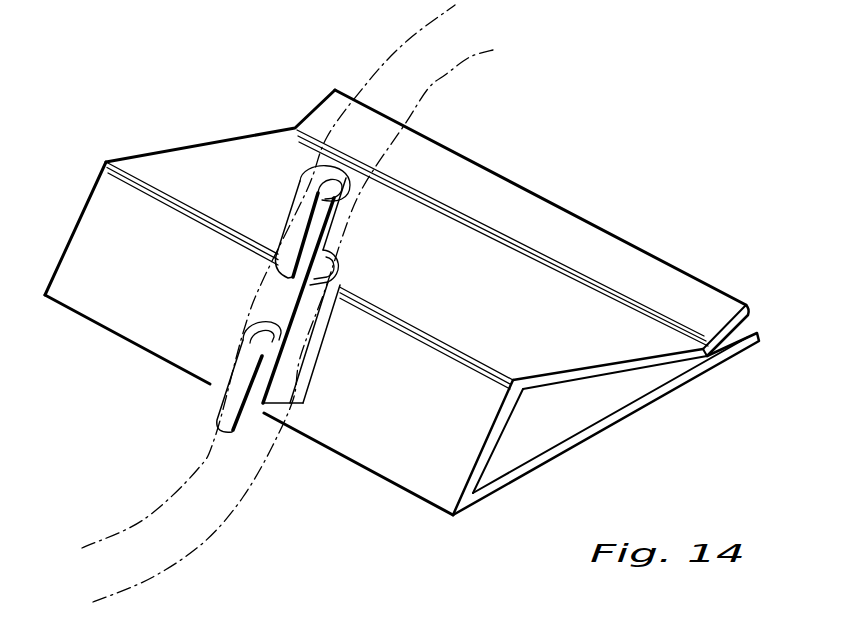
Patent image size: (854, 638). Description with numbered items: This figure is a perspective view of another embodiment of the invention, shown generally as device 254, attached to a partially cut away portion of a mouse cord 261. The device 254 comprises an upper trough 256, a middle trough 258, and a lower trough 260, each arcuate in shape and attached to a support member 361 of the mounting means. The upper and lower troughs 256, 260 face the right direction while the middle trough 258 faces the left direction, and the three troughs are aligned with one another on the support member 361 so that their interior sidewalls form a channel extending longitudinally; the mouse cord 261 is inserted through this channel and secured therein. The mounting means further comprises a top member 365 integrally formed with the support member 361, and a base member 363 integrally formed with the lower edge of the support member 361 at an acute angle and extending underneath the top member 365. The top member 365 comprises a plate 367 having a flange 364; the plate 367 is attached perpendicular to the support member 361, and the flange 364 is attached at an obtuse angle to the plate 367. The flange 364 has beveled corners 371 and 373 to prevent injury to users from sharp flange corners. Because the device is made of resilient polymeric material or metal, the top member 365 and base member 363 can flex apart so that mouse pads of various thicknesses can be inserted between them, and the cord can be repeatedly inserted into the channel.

The device 254 is at (94, 153).
The upper arcuate-shaped trough 256 is at (307, 208).
The middle arcuate-shaped trough 258 is at (322, 320).
The lower arcuate-shaped trough 260 is at (218, 406).
The mouse cord 261 is at (428, 70).
The support member 361 is at (420, 478).
The base member 363 is at (596, 426).
The flange 364 is at (618, 258).
The top member 365 is at (527, 319).
The plate 367 is at (472, 212).
The beveled corner 371 is at (750, 306).
The beveled corner 373 is at (333, 88).